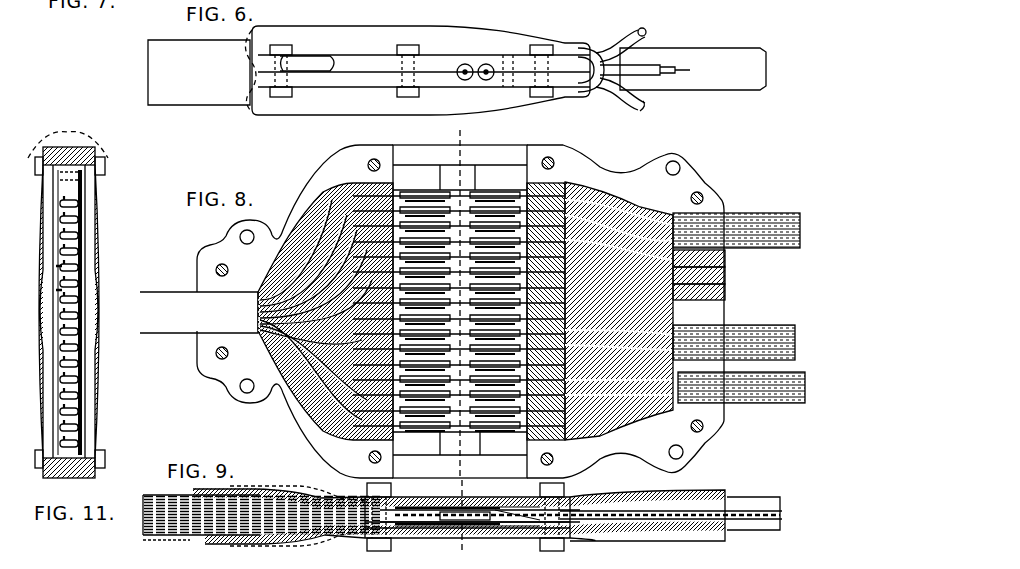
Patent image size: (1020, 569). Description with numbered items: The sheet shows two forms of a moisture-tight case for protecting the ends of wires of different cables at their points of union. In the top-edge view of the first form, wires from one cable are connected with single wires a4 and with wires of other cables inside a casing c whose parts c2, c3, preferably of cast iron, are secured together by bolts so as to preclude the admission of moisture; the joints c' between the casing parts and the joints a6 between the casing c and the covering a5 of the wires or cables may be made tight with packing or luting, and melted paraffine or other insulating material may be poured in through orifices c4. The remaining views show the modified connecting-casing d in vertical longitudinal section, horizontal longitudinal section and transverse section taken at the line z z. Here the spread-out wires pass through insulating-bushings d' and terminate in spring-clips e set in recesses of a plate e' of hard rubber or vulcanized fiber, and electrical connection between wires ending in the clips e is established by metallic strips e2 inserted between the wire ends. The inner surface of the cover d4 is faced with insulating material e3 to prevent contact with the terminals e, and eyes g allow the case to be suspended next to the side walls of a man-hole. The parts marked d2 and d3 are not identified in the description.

In FIG. 6, the single wires a4 is at (642, 30).
In FIG. 8, the single wires a4 is at (739, 308).
In FIG. 9, the single wires a4 is at (784, 515).
In FIG. 6, the covering of the wires or cables a5 is at (664, 34).
In FIG. 8, the covering of the wires or cables a5 is at (199, 312).
In FIG. 9, the covering of the wires or cables a5 is at (148, 532).
In FIG. 9, the joints between casing and cable covering a6 is at (210, 537).
In FIG. 6, the casing c is at (402, 70).
In FIG. 6, the joints between casing parts c' is at (307, 52).
In FIG. 6, the casing part c2 is at (424, 50).
In FIG. 6, the casing part c3 is at (424, 95).
In FIG. 6, the orifices c4 is at (484, 63).
In FIG. 11, the connecting-casing d is at (68, 295).
In FIG. 8, the connecting-casing d is at (460, 311).
In FIG. 9, the connecting-casing d is at (458, 522).
In FIG. 8, the insulating-bushings d' is at (465, 309).
In FIG. 9, the insulating-bushings d' is at (366, 517).
In FIG. 11, the side wall d2 is at (96, 212).
In FIG. 9, the side wall d2 is at (306, 497).
In FIG. 9, the clamping plate d3 is at (345, 530).
In FIG. 11, the cover d4 is at (48, 210).
In FIG. 9, the cover d4 is at (416, 540).
In FIG. 11, the spring-clips e is at (87, 321).
In FIG. 8, the spring-clips e is at (459, 302).
In FIG. 9, the spring-clips e is at (447, 499).
In FIG. 11, the plate e' is at (88, 312).
In FIG. 8, the plate e' is at (458, 311).
In FIG. 9, the plate e' is at (480, 497).
In FIG. 11, the metallic strips e2 is at (58, 270).
In FIG. 8, the metallic strips e2 is at (464, 311).
In FIG. 9, the metallic strips e2 is at (465, 518).
In FIG. 9, the insulating material e3 is at (495, 532).
In FIG. 8, the eyes g is at (239, 238).
In FIG. 8, the section line z is at (460, 301).
In FIG. 9, the section line z is at (458, 522).